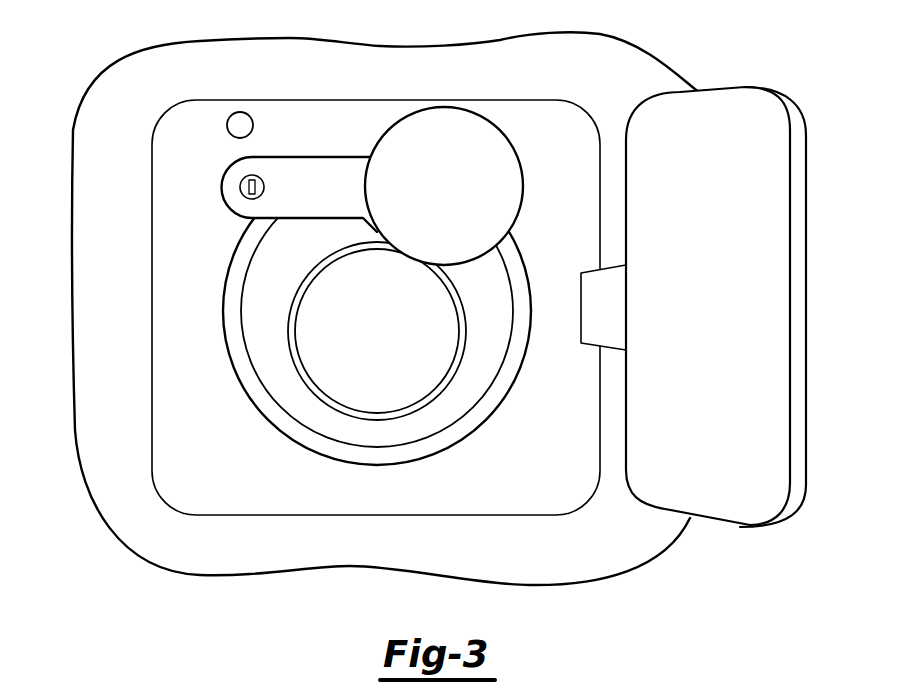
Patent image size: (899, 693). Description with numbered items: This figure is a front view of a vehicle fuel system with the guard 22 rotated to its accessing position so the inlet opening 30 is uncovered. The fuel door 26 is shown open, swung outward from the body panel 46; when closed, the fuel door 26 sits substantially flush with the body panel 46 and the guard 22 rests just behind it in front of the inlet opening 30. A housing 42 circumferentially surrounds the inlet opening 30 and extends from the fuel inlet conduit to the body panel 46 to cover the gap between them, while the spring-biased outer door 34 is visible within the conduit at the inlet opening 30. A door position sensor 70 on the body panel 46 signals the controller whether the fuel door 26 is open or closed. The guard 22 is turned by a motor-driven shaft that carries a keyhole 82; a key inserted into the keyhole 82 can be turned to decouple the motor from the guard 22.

The guard 22 is at (483, 175).
The fuel door 26 is at (730, 188).
The inlet opening 30 is at (440, 415).
The outer door 34 is at (418, 358).
The housing 42 is at (402, 448).
The body panel 46 is at (100, 385).
The door position sensor 70 is at (240, 112).
The keyhole 82 is at (240, 186).